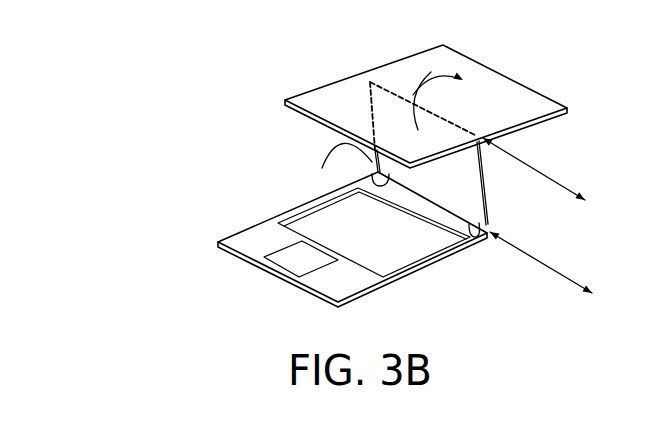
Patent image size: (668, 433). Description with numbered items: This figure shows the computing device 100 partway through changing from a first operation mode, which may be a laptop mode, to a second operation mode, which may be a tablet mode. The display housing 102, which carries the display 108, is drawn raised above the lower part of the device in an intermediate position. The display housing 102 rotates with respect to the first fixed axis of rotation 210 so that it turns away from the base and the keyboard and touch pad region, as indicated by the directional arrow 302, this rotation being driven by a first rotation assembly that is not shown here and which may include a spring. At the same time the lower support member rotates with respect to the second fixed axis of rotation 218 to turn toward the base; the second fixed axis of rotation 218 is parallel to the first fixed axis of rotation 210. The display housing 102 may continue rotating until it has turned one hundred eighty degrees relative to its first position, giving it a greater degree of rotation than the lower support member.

The computing device 100 is at (203, 71).
The display housing 102 is at (388, 64).
The display 108 is at (350, 102).
The directional arrow 302 is at (431, 72).
The first fixed axis of rotation 210 is at (563, 183).
The second fixed axis of rotation 218 is at (545, 263).